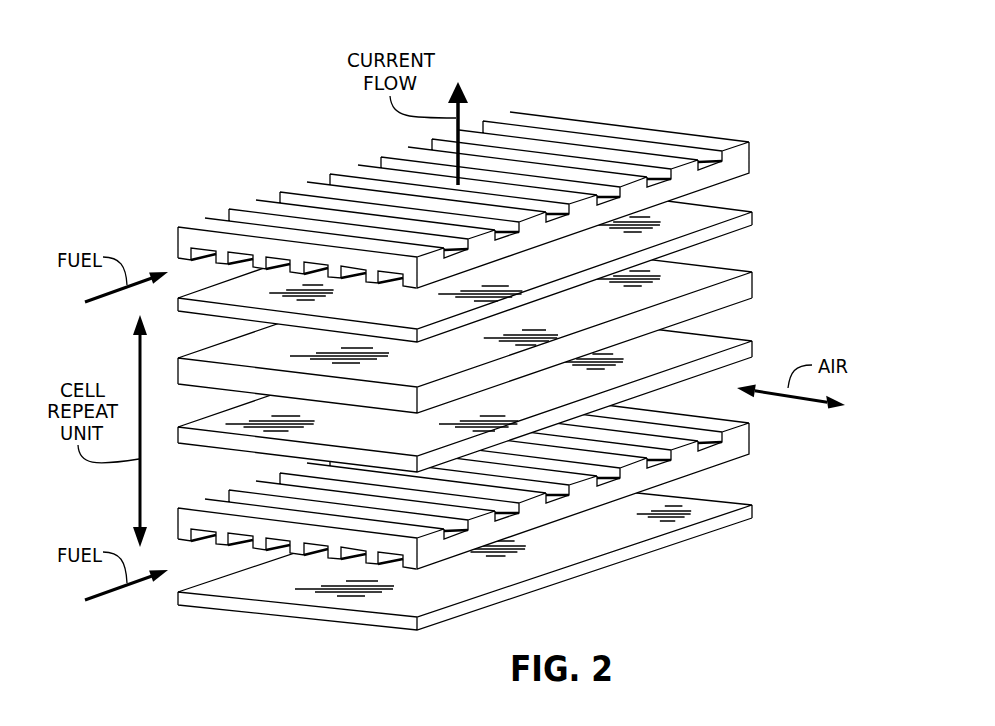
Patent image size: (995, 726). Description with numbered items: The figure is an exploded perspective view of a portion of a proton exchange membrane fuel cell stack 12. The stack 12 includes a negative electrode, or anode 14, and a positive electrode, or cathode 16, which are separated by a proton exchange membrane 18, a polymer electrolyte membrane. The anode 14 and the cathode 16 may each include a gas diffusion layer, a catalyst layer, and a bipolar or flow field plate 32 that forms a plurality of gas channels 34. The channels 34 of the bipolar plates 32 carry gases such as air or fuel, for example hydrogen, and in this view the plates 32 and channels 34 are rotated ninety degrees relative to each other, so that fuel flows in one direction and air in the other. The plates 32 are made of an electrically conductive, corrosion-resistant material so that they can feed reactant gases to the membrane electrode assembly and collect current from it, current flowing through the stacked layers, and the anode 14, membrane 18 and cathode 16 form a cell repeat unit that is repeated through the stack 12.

The proton exchange membrane fuel cell stack 12 is at (300, 68).
The negative electrode (anode) 14 is at (752, 220).
The positive electrode (cathode) 16 is at (752, 352).
The proton exchange membrane 18 is at (752, 290).
The bipolar plate 32 is at (752, 160).
The gas channels 34 is at (671, 475).